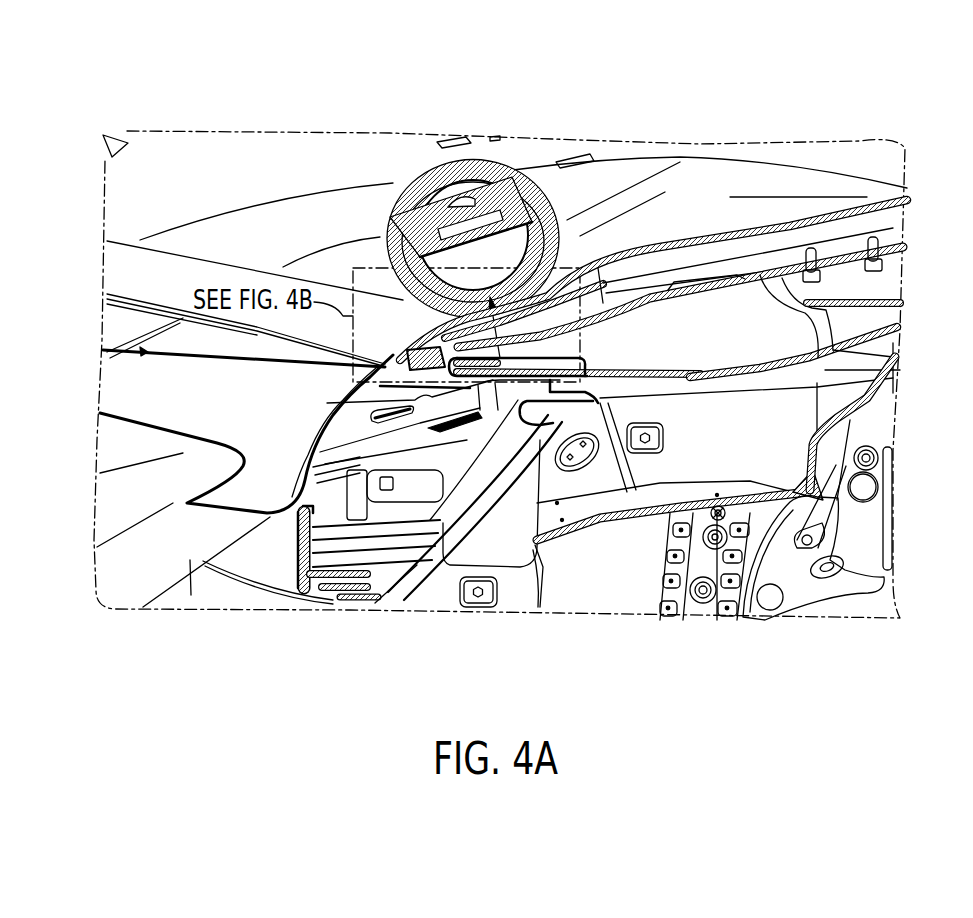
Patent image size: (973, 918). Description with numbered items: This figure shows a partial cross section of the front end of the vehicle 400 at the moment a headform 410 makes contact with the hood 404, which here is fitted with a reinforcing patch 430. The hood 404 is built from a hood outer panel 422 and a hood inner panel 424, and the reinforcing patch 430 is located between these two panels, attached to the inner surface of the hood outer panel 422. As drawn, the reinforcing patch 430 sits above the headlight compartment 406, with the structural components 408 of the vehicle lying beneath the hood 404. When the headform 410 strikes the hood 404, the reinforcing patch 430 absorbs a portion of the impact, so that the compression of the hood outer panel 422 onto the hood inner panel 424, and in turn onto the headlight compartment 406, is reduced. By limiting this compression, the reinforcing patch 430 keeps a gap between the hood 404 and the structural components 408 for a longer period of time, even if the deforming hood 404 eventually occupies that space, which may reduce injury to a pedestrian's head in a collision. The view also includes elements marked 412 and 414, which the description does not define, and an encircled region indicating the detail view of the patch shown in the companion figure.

The vehicle 400 is at (230, 121).
The hood 404 is at (703, 190).
The headlight compartment 406 is at (177, 427).
The structural components 408 is at (642, 600).
The headform 410 is at (428, 207).
The roof rail flange 412 is at (510, 350).
The pillar reinforcement strut 414 is at (490, 443).
The hood outer panel 422 is at (833, 217).
The hood inner panel 424 is at (893, 257).
The reinforcing patch 430 is at (595, 246).